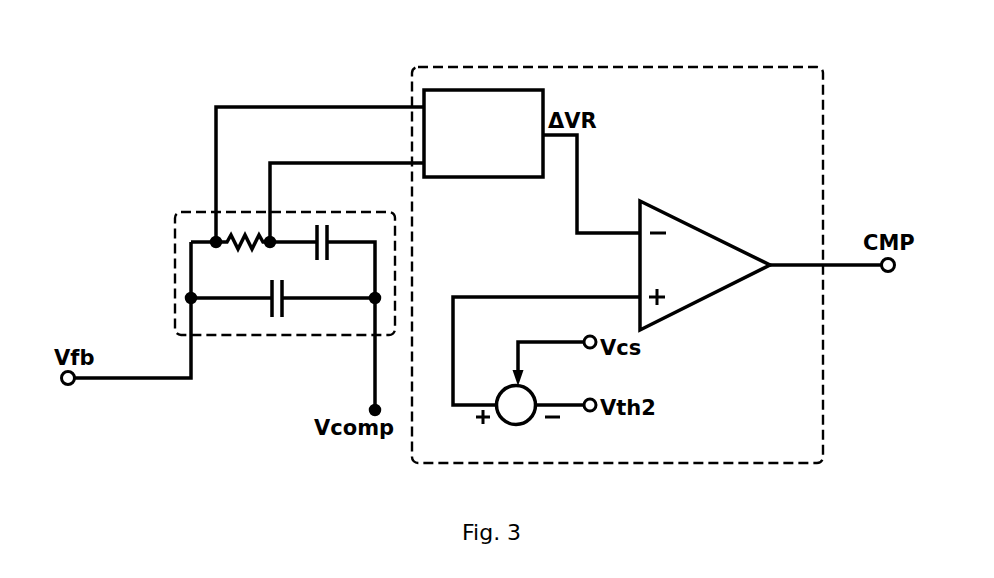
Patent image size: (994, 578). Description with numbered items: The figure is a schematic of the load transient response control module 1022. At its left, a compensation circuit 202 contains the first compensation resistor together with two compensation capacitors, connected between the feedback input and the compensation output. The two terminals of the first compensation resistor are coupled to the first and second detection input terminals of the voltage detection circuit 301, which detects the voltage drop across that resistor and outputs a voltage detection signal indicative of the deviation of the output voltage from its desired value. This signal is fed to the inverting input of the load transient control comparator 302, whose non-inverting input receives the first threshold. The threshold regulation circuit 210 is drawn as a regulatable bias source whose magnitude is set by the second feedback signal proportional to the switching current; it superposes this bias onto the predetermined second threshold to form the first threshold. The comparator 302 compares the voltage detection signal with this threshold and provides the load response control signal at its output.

The compensation network 202 is at (173, 246).
The voltage detection circuit 301 is at (483, 133).
The load transient control comparator 302 is at (705, 265).
The load transient response control module 1022 is at (617, 66).
The threshold regulation circuit 210 is at (501, 391).